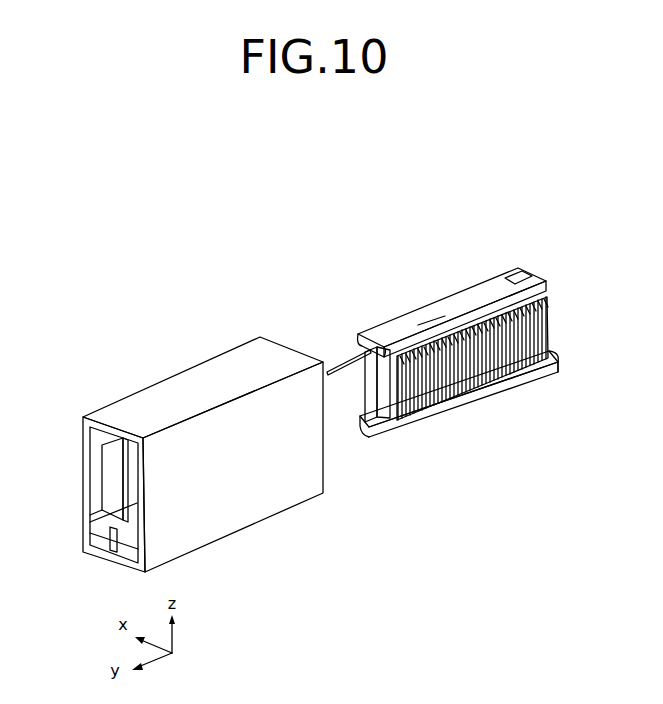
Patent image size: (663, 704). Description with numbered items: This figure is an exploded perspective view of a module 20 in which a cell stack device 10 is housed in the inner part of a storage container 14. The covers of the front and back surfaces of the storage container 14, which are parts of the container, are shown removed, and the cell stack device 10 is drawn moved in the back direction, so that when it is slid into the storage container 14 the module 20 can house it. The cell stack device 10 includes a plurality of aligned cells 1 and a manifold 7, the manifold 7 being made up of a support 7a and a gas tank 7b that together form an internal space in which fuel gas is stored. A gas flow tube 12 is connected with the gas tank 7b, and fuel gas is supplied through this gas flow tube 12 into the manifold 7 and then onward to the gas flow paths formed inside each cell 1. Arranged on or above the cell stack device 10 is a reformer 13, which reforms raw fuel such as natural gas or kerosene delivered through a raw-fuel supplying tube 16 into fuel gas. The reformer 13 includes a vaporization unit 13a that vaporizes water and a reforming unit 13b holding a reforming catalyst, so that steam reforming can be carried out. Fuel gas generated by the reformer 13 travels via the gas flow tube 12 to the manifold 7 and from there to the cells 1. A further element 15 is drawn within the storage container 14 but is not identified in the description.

The cell 1 is at (550, 312).
The manifold 7 is at (455, 471).
The support 7a is at (408, 432).
The gas tank 7b is at (383, 437).
The cell stack device 10 is at (477, 260).
The gas flow tube 12 is at (364, 350).
The reformer 13 is at (467, 258).
The vaporization unit 13a is at (420, 318).
The reforming unit 13b is at (527, 272).
The storage container 14 is at (224, 362).
The partition of case 15 is at (130, 458).
The raw-fuel supplying tube 16 is at (335, 366).
The module 20 is at (156, 174).